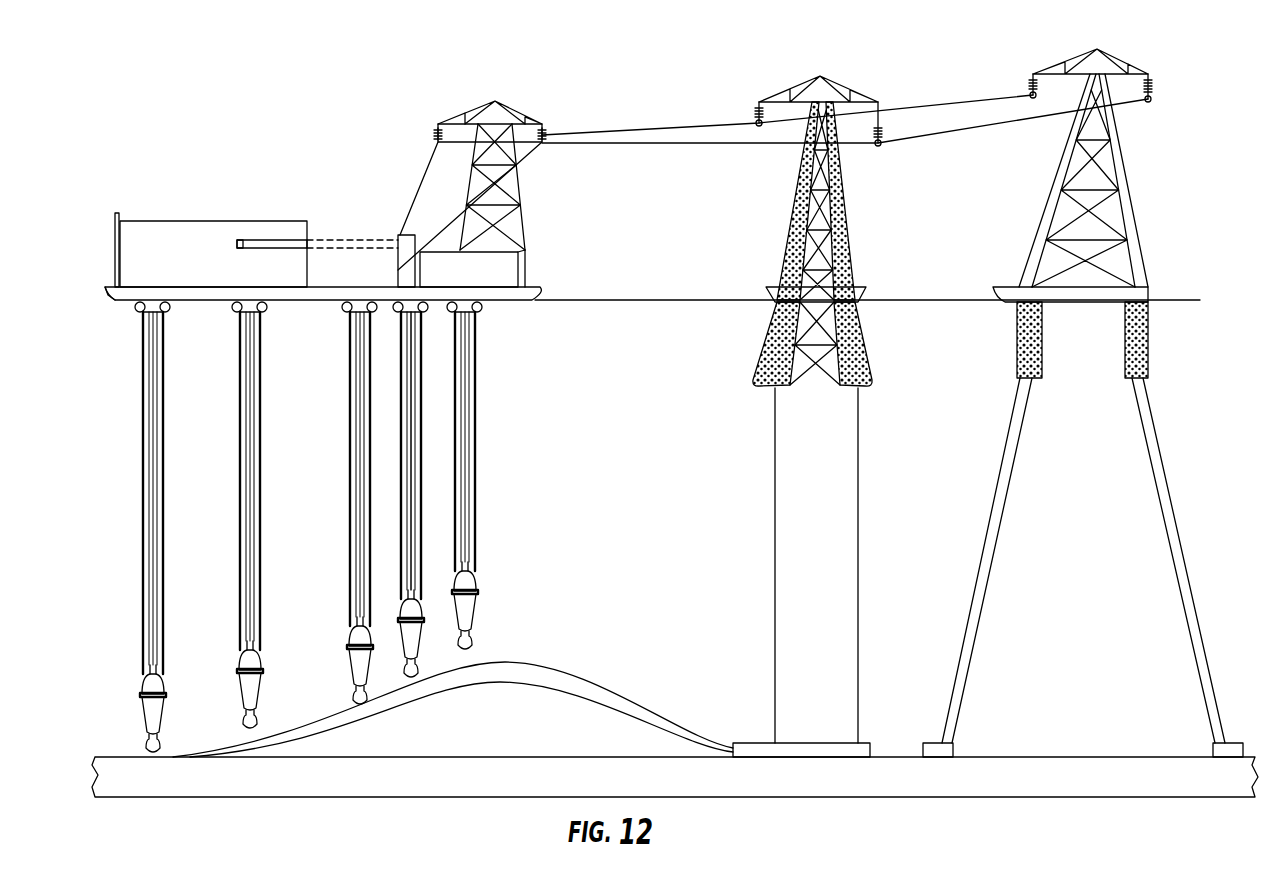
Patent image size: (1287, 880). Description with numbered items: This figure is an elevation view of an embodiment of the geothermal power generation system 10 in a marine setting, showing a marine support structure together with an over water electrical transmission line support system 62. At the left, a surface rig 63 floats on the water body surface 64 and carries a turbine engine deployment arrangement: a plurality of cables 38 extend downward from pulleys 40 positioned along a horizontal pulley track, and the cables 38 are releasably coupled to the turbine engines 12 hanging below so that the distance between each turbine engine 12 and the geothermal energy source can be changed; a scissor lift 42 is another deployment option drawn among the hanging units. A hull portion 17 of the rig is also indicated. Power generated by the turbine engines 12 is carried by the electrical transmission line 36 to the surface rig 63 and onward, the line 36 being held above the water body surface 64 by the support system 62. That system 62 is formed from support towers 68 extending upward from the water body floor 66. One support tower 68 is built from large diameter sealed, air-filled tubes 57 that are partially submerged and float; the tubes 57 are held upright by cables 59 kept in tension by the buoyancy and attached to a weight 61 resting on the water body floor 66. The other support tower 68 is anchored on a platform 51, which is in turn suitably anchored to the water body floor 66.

The geothermal power generation system 10 is at (290, 806).
The turbine engine 12 is at (125, 702).
The vessel hull 17 is at (113, 296).
The electrical transmission line 36 is at (700, 143).
The cables 38 is at (143, 467).
The pulleys 40 is at (135, 310).
The scissor lift 42 is at (411, 400).
The platform 51 is at (1150, 295).
The tubes 57 is at (785, 262).
The cables 59 is at (858, 505).
The weight 61 is at (805, 744).
The over water electrical transmission line support system 62 is at (813, 204).
The surface rig 63 is at (310, 205).
The water body surface 64 is at (620, 300).
The water body floor 66 is at (312, 730).
The support tower 68 is at (796, 244).